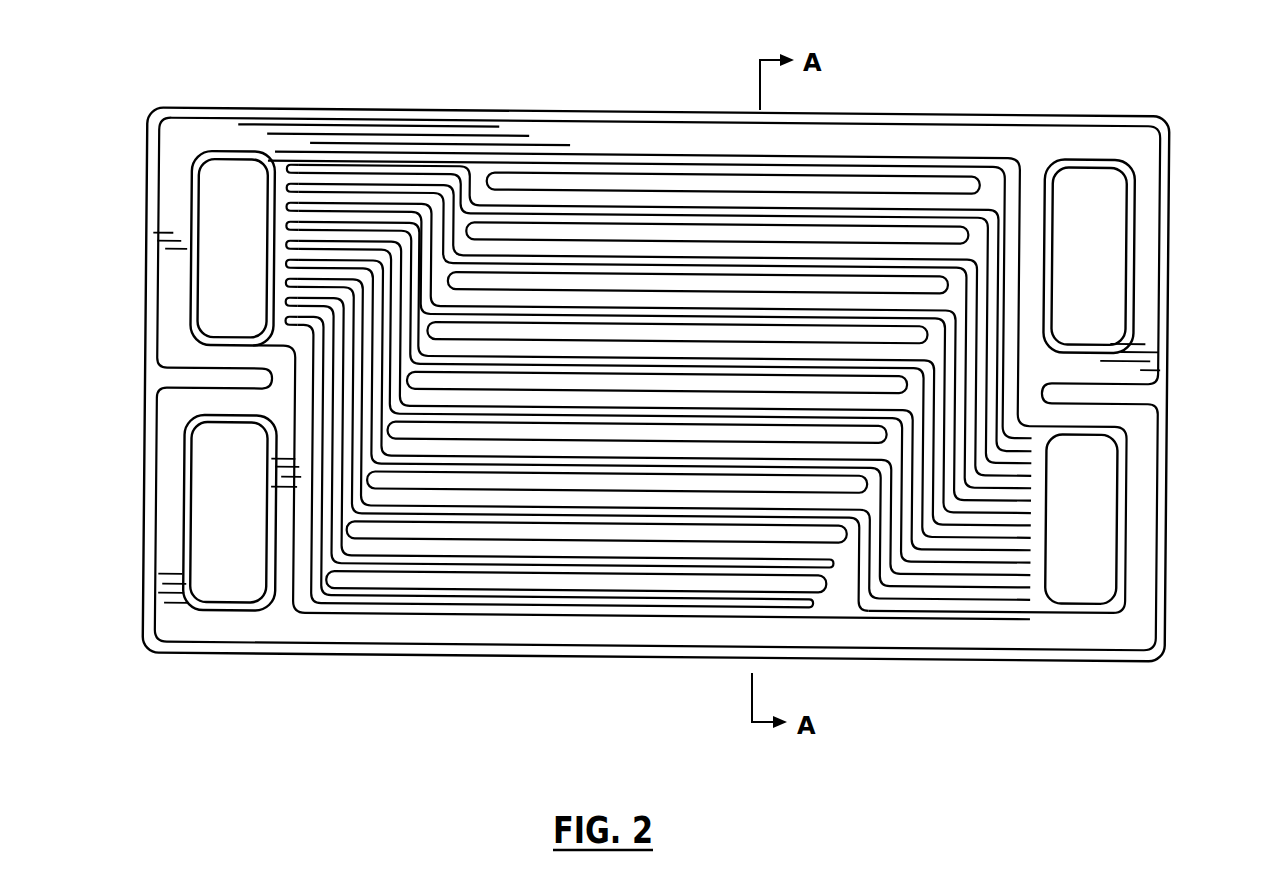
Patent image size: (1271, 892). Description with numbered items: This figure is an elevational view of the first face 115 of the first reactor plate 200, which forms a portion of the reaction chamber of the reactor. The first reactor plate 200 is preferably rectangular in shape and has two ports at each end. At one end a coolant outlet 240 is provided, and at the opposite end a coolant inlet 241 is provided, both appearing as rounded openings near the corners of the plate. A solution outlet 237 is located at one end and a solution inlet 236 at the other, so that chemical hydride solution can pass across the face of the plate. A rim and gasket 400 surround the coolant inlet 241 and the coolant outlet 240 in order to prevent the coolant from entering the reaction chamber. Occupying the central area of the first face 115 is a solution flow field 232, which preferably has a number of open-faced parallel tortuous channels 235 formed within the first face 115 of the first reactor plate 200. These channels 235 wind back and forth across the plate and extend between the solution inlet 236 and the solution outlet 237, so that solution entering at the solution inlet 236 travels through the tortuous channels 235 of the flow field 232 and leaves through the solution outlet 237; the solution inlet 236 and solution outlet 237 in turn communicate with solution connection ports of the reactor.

The first reactor plate 200 is at (414, 98).
The first face 115 is at (644, 122).
The solution outlet 237 is at (228, 200).
The coolant outlet 240 is at (1100, 250).
The coolant inlet 241 is at (217, 500).
The solution inlet 236 is at (1095, 530).
The solution flow field 232 is at (636, 495).
The channels 235 is at (1020, 535).
The gasket 400 is at (390, 634).